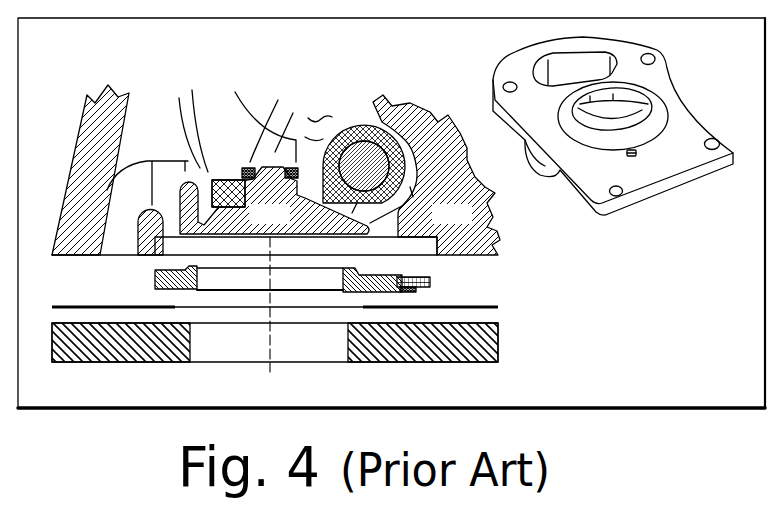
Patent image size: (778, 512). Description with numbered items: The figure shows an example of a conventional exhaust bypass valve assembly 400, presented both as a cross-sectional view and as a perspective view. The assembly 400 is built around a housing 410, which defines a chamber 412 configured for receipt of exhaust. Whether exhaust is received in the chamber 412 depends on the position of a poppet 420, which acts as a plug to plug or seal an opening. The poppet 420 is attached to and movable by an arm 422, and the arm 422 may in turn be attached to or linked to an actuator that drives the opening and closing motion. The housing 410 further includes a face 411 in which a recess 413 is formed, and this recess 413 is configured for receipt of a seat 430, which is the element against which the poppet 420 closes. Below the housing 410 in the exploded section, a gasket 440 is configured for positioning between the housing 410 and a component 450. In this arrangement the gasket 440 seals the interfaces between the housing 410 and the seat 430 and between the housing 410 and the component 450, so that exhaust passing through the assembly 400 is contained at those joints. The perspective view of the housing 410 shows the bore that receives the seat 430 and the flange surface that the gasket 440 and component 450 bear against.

The conventional exhaust valve assembly 400 is at (83, 55).
The housing 410 is at (470, 223).
The face 411 is at (89, 257).
The chamber 412 is at (240, 141).
The recess 413 is at (153, 256).
The poppet 420 is at (287, 223).
The arm 422 is at (362, 125).
The seat 430 is at (432, 280).
The gasket 440 is at (500, 308).
The component 450 is at (498, 340).